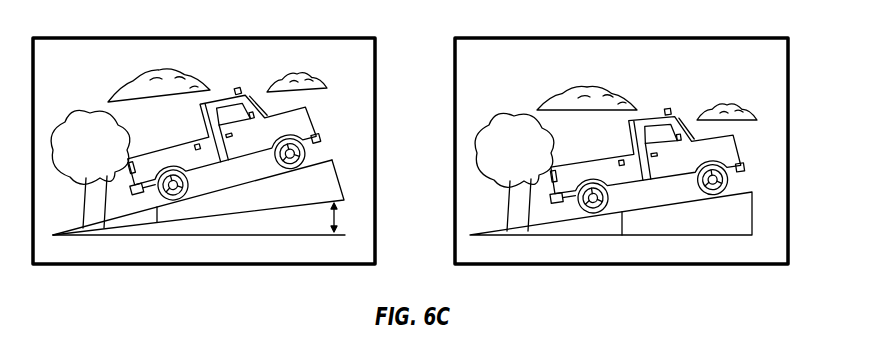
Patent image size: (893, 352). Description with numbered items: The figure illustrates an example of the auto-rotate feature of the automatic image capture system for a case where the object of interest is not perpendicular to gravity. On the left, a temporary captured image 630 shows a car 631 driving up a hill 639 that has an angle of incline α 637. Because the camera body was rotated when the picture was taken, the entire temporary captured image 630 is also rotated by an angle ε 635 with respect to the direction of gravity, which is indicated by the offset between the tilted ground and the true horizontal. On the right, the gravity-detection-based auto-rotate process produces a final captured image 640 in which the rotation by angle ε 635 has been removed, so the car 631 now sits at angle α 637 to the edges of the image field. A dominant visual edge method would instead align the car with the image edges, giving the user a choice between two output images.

The temporary captured image 630 is at (358, 38).
The final captured image 640 is at (455, 95).
The car 631 is at (198, 137).
The angle of incline α 637 is at (177, 210).
The hill 639 is at (342, 180).
The angle ε 635 is at (342, 217).